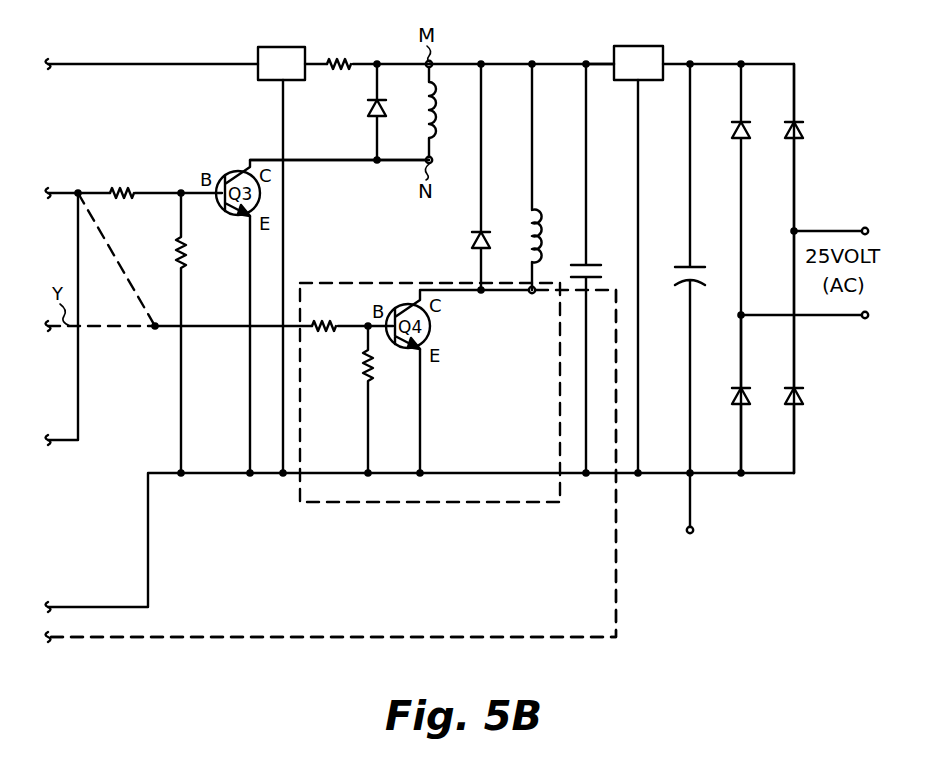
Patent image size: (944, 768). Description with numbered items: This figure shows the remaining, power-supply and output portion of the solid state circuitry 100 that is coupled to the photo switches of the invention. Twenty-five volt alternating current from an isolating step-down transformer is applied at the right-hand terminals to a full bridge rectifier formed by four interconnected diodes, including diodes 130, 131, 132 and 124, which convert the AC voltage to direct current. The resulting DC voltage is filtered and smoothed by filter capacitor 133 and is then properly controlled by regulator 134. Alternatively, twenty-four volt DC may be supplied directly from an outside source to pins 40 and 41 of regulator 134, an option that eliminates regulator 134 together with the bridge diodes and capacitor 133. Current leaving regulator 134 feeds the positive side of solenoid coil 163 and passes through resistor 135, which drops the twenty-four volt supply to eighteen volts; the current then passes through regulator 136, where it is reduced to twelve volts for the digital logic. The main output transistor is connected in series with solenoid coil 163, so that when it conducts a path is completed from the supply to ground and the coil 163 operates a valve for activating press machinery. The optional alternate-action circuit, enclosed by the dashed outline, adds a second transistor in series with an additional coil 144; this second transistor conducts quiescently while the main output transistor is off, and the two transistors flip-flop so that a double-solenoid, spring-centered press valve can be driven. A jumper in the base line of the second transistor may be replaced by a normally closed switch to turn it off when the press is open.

The regulator 136 is at (270, 47).
The resistor 135 is at (348, 62).
The pin of regulator 134 40 is at (612, 62).
The regulator 134 is at (660, 46).
The pin of regulator 134 41 is at (639, 82).
The solenoid coil 163 is at (433, 130).
The coil 144 is at (534, 212).
The filter capacitor 133 is at (700, 268).
The diode 124 is at (766, 112).
The diode 130 is at (802, 132).
The diode 131 is at (748, 392).
The diode 132 is at (804, 396).
The solid state circuitry 100 is at (718, 568).